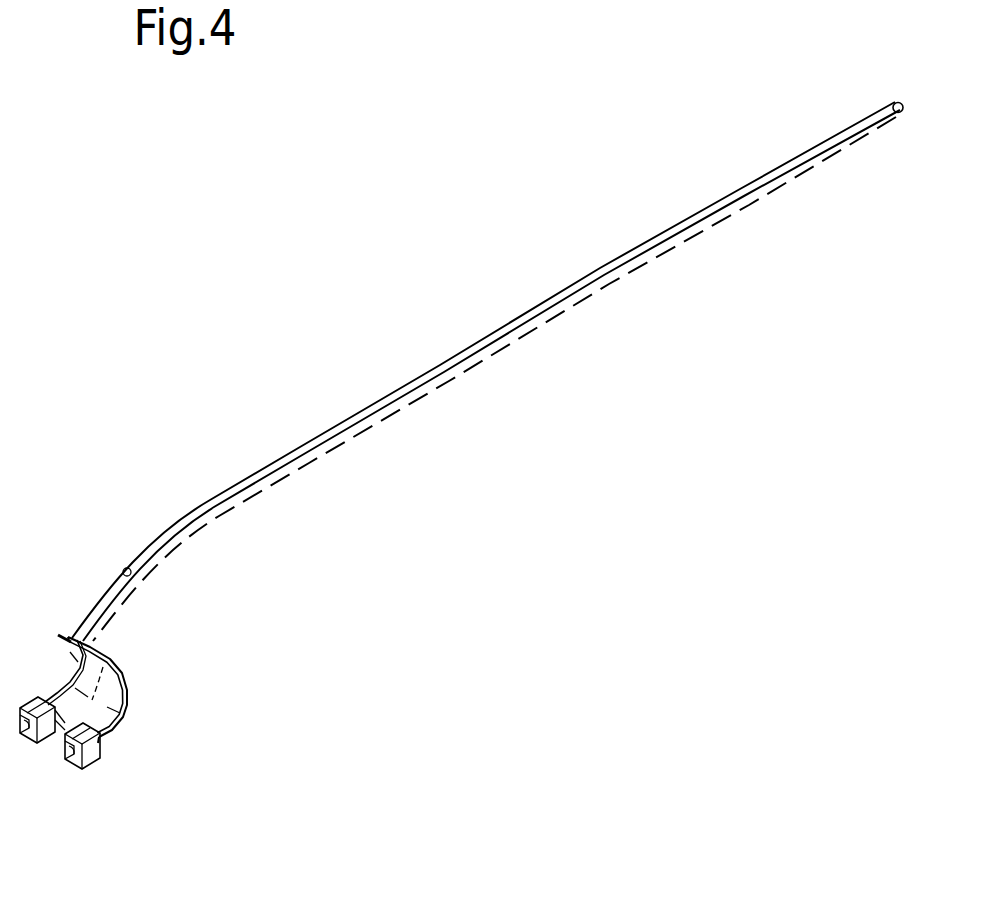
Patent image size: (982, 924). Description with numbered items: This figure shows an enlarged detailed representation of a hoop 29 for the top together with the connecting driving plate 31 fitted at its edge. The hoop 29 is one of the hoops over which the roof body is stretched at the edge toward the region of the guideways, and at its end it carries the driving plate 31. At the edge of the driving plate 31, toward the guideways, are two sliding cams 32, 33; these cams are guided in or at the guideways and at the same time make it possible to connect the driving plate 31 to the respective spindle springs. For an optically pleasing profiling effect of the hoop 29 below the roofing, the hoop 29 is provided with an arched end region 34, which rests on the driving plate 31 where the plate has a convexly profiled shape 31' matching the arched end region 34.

The hoop 29 is at (494, 240).
The driving plate 31 is at (153, 691).
The convexly profiled shape 31' is at (158, 695).
The sliding cam 32 is at (40, 858).
The sliding cam 33 is at (107, 858).
The arched end region 34 is at (107, 577).